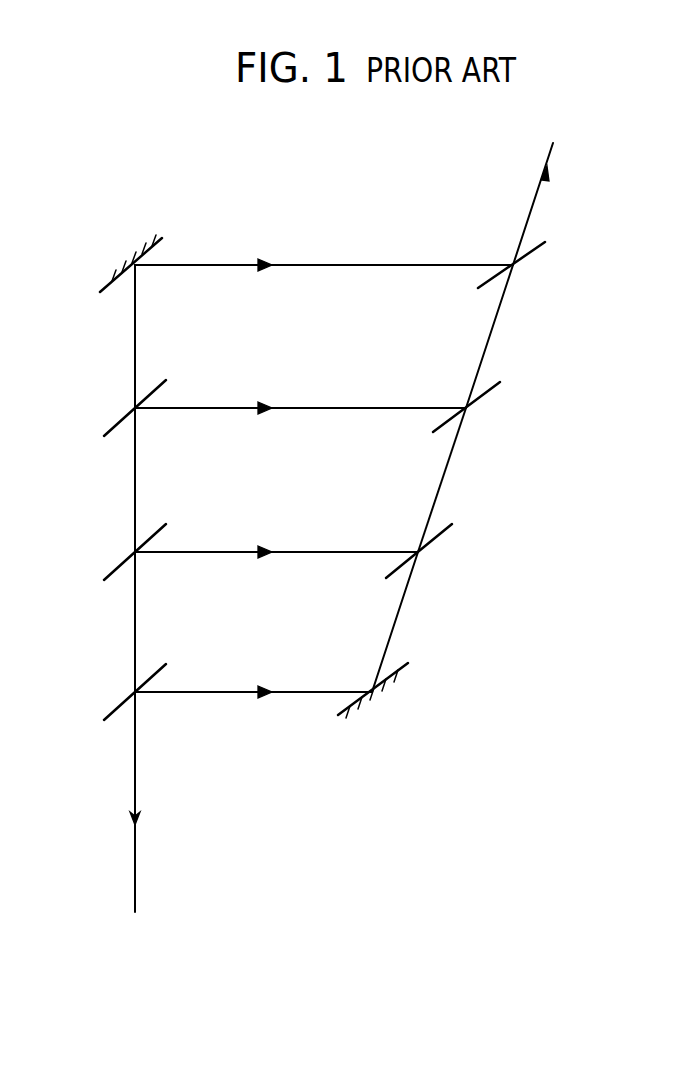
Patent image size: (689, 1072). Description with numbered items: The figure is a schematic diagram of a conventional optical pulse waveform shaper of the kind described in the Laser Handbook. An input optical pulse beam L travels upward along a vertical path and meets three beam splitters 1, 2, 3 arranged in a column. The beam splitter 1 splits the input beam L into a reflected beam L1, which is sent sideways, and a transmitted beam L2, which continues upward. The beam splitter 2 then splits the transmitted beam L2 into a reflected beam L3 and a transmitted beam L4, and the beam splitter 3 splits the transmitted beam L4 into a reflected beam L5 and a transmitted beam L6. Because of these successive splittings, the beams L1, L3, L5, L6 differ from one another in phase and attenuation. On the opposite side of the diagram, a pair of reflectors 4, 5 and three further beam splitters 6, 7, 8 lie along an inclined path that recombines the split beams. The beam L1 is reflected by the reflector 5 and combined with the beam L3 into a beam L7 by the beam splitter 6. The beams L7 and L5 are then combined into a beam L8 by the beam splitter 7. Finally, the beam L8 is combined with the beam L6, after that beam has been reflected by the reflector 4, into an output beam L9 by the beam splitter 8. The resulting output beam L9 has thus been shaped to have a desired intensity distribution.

The beam splitter 1 is at (114, 702).
The beam splitter 2 is at (114, 560).
The beam splitter 3 is at (116, 418).
The reflector 4 is at (98, 284).
The reflector 5 is at (414, 680).
The beam splitter 6 is at (436, 536).
The beam splitter 7 is at (484, 396).
The beam splitter 8 is at (526, 256).
The input optical pulse beam L is at (135, 905).
The reflected beam L1 is at (285, 691).
The transmitted beam L2 is at (137, 628).
The reflected beam L3 is at (312, 551).
The transmitted beam L4 is at (137, 474).
The reflected beam L5 is at (318, 407).
The transmitted beam L6 is at (137, 334).
The combined beam L7 is at (448, 470).
The combined beam L8 is at (494, 328).
The output beam L9 is at (537, 196).